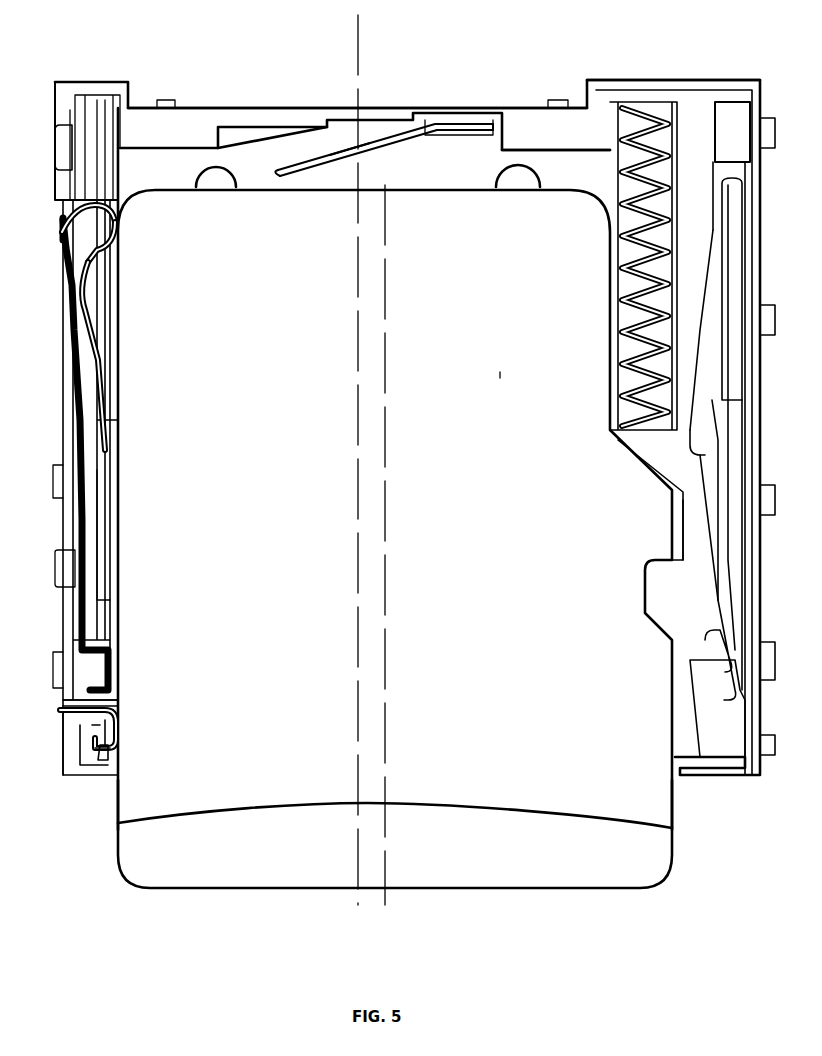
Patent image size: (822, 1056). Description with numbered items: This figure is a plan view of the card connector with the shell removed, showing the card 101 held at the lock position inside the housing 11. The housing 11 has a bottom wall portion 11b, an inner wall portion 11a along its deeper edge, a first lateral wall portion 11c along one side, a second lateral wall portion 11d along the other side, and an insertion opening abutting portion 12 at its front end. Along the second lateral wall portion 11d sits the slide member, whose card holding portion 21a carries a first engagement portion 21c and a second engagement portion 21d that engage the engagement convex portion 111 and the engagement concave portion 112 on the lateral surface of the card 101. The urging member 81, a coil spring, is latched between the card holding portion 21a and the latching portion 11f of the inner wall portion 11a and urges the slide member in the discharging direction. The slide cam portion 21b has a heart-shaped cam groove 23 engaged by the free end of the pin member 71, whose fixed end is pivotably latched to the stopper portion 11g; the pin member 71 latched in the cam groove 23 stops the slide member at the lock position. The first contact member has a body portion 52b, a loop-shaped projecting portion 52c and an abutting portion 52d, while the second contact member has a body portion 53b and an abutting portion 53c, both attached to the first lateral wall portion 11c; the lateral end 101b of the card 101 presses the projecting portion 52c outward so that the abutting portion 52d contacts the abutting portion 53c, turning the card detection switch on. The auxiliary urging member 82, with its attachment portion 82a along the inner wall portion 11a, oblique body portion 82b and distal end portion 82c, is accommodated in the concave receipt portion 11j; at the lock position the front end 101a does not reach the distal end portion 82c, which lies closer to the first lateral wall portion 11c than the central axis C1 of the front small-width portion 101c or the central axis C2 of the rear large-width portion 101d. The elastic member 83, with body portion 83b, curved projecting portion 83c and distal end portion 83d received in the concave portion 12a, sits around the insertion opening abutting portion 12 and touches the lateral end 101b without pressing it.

The housing 11 is at (105, 70).
The inner wall portion 11a is at (200, 108).
The bottom wall portion 11b is at (550, 172).
The first lateral wall portion 11c is at (66, 512).
The second lateral wall portion 11d is at (750, 384).
The latching portion 11f is at (668, 95).
The stopper portion 11g is at (742, 730).
The concave receipt portion 11j is at (282, 140).
The insertion opening abutting portion 12 is at (66, 750).
The concave portion 12a is at (100, 760).
The card holding portion 21a is at (697, 522).
The slide cam portion 21b is at (742, 177).
The first engagement portion 21c is at (700, 452).
The second engagement portion 21d is at (688, 577).
The cam groove 23 is at (738, 282).
The body portion 52b is at (110, 312).
The projecting portion 52c is at (124, 230).
The abutting portion 52d is at (82, 215).
The body portion 53b is at (58, 290).
The abutting portion 53c is at (60, 232).
The pin member 71 is at (728, 580).
The urging member 81 is at (670, 118).
The auxiliary urging member 82 is at (340, 140).
The attachment portion 82a is at (453, 125).
The body portion 82b is at (315, 150).
The distal end portion 82c is at (243, 167).
The elastic member 83 is at (60, 712).
The body portion 83b is at (116, 725).
The projecting portion 83c is at (118, 735).
The distal end portion 83d is at (118, 752).
The card 101 is at (247, 890).
The front end 101a is at (402, 183).
The lateral end 101b is at (118, 806).
The front small-width portion 101c is at (500, 376).
The rear large-width portion 101d is at (584, 806).
The engagement convex portion 111 is at (650, 460).
The engagement concave portion 112 is at (645, 596).
The central axis C1 is at (358, 473).
The central axis C2 is at (385, 559).